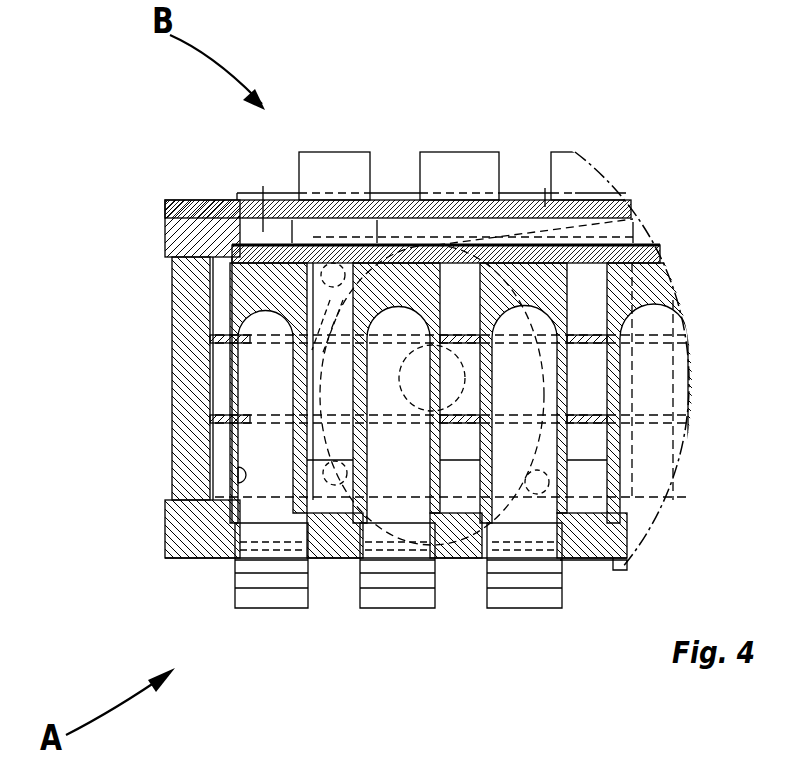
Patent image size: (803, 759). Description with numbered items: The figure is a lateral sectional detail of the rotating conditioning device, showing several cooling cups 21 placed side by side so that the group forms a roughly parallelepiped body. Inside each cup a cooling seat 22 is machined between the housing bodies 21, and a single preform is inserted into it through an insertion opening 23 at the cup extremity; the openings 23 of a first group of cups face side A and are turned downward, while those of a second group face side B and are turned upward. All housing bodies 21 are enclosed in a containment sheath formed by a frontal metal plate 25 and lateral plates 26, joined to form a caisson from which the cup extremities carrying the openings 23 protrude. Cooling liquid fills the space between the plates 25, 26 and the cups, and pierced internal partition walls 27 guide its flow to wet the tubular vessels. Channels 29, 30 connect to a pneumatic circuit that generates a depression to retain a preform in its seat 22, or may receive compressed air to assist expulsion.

The cooling cup 21 is at (172, 388).
The cooling seat 22 is at (236, 488).
The insertion opening 23 is at (343, 140).
The frontal metal plate 25 is at (166, 542).
The lateral plate 26 is at (172, 306).
The internal partition wall 27 is at (172, 345).
The channel 29 is at (272, 283).
The channel 30 is at (505, 240).